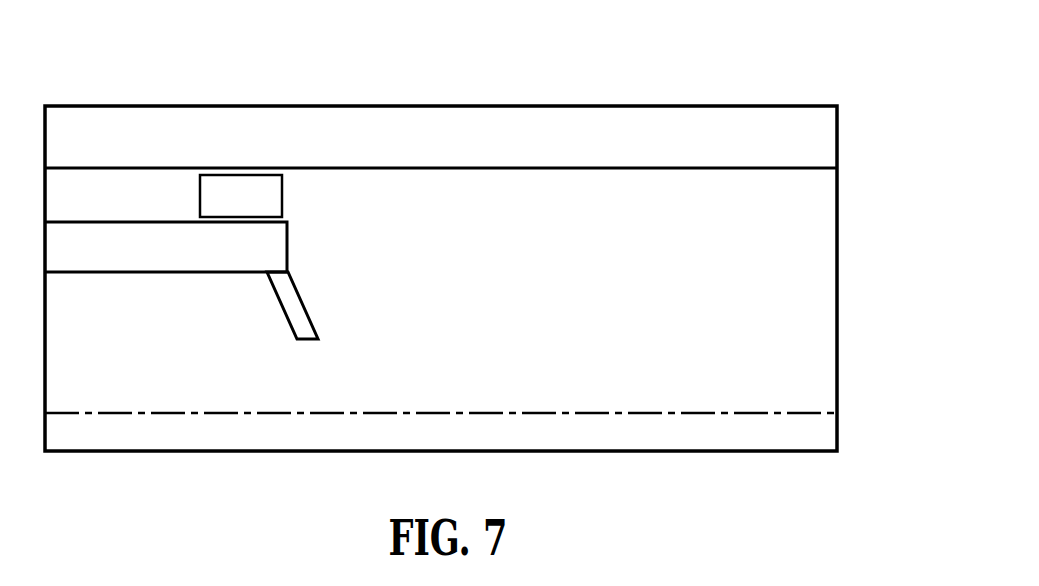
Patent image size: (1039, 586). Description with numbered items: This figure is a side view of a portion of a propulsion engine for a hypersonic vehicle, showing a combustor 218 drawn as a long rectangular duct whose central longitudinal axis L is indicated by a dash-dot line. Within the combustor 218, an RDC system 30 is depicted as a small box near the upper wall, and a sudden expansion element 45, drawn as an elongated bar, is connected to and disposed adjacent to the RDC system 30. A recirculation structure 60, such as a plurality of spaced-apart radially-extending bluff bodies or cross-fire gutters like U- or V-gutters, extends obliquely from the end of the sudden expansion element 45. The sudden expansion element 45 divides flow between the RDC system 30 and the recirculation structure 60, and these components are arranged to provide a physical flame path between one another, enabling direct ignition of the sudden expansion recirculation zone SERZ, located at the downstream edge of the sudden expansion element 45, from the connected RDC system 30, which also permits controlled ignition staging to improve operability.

The combustor 218 is at (441, 309).
The central longitudinal axis L is at (441, 465).
The sudden expansion element 45 is at (245, 162).
The RDC system 30 is at (220, 130).
The recirculation structure 60 is at (250, 396).
The sudden expansion recirculation zone SERZ is at (462, 155).